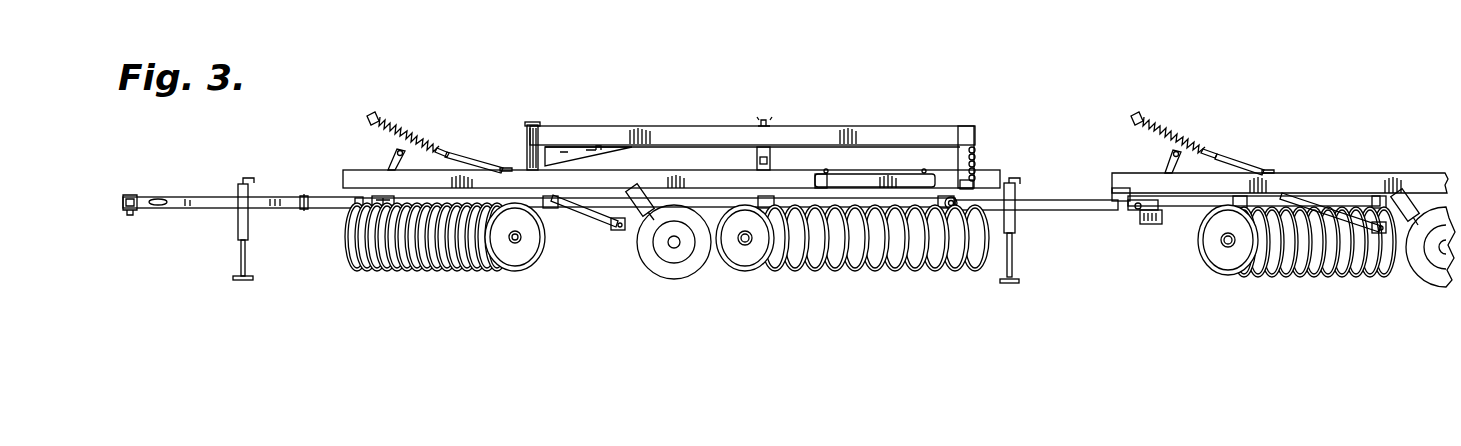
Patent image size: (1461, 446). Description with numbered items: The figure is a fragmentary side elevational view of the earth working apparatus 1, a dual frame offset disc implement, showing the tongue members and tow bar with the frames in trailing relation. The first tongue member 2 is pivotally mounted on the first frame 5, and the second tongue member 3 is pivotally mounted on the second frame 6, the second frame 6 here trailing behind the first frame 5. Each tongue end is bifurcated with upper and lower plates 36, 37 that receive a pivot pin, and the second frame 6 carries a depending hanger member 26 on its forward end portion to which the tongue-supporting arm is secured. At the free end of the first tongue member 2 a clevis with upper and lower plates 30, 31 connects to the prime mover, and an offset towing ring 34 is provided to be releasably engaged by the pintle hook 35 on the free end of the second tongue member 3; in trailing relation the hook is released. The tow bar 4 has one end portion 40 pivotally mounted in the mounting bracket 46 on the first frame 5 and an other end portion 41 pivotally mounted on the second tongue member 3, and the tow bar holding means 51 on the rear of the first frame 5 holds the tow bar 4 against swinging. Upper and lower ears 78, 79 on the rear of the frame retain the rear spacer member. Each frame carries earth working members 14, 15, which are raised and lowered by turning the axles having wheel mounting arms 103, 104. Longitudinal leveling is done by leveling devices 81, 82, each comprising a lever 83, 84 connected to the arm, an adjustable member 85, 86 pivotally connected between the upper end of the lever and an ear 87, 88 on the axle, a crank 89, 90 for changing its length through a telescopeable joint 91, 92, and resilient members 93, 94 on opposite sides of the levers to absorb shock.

The earth working apparatus 1 is at (1058, 76).
The first tongue member 2 is at (207, 194).
The second tongue member 3 is at (1038, 210).
The tow bar 4 is at (873, 125).
The first frame 5 is at (696, 168).
The second frame 6 is at (1364, 171).
The earth working members 14 is at (358, 232).
The earth working members 15 is at (1216, 260).
The hanger member 26 is at (1124, 202).
The upper plate 30 is at (126, 197).
The lower plate 31 is at (126, 212).
The towing ring 34 is at (160, 208).
The pintle hook 35 is at (953, 210).
The upper plate 36 is at (1178, 198).
The lower plate 37 is at (1170, 214).
The one end portion of tow bar 40 is at (552, 126).
The other end portion of tow bar 41 is at (957, 126).
The mounting bracket 46 is at (526, 150).
The tow bar holding means 51 is at (765, 120).
The upper ear 78 is at (820, 174).
The lower ear 79 is at (836, 186).
The leveling device 81 is at (490, 162).
The leveling device 82 is at (1244, 160).
The lever 83 is at (388, 160).
The lever 84 is at (1166, 164).
The adjustable member 85 is at (586, 222).
The adjustable member 86 is at (1324, 194).
The ear 87 is at (628, 224).
The ear 88 is at (1405, 232).
The crank 89 is at (374, 116).
The crank 90 is at (1138, 116).
The telescopeable joint 91 is at (448, 150).
The telescopeable joint 92 is at (1220, 150).
The resilient member 93 is at (424, 136).
The resilient member 94 is at (1192, 135).
The wheel mounting arm 103 is at (646, 190).
The wheel mounting arm 104 is at (1420, 190).